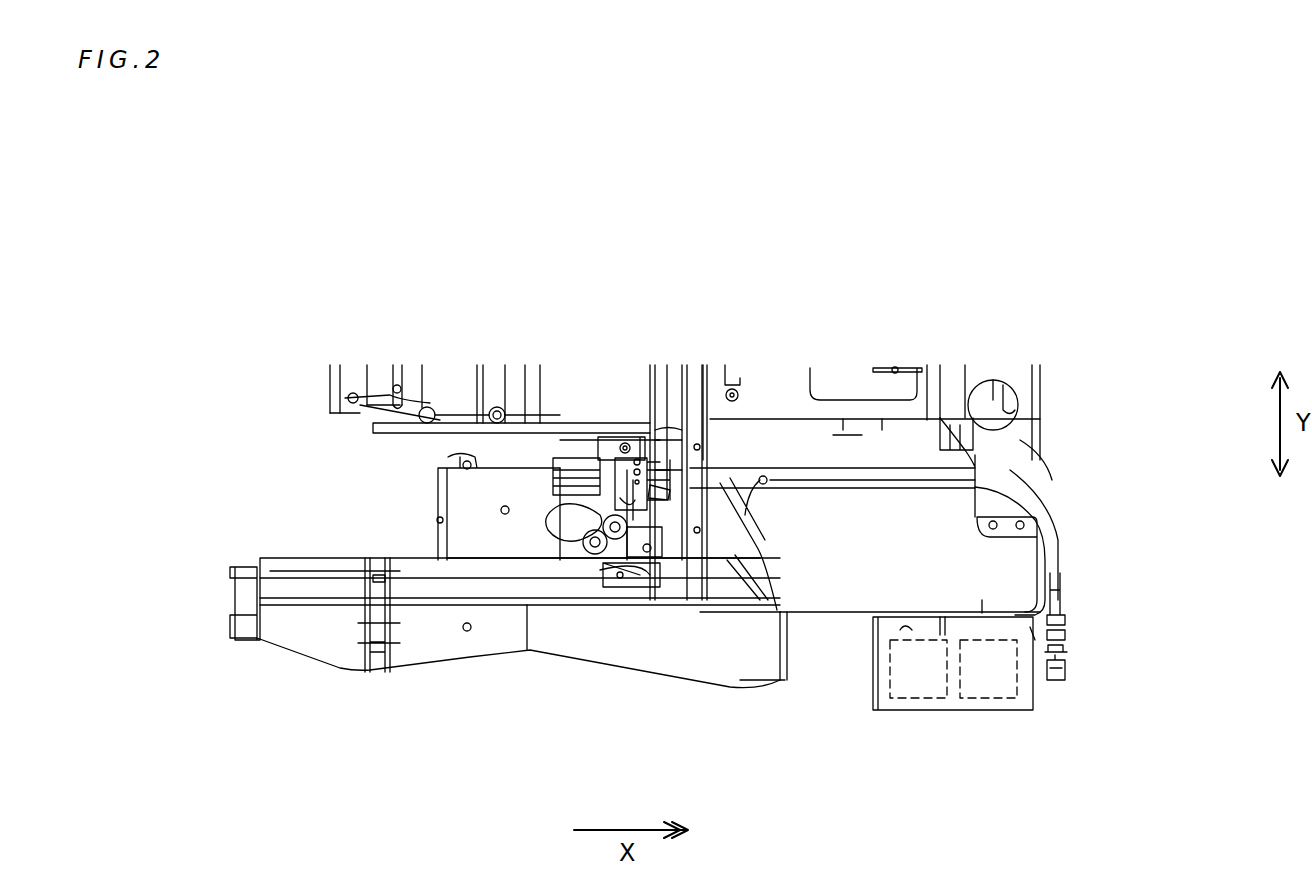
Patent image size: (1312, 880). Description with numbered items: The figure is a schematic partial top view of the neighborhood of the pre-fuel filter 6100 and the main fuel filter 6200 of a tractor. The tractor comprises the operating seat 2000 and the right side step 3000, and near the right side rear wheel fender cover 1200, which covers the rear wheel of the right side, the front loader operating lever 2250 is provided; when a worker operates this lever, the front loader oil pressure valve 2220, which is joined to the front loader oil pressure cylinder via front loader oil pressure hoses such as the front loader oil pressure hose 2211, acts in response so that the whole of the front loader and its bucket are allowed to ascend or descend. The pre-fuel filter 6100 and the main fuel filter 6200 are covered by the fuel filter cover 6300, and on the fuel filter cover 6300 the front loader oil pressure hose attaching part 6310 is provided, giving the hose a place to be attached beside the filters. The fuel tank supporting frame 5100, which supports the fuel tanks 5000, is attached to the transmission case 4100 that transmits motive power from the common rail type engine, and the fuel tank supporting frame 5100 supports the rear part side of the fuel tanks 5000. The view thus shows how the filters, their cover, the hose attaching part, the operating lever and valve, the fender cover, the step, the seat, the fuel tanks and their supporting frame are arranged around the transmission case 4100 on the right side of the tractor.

The right side rear wheel fender cover 1200 is at (312, 662).
The operating seat 2000 is at (530, 452).
The front loader oil pressure hose 2211 is at (1065, 672).
The front loader oil pressure valve 2220 is at (600, 455).
The front loader operating lever 2250 is at (607, 567).
The right side step 3000 is at (830, 680).
The transmission case 4100 is at (753, 363).
The fuel tanks 5000 is at (783, 492).
The fuel tank supporting frame 5100 is at (682, 603).
The pre-fuel filter 6100 is at (918, 705).
The main fuel filter 6200 is at (993, 710).
The fuel filter cover 6300 is at (948, 712).
The front loader oil pressure hose attaching part 6310 is at (1063, 652).